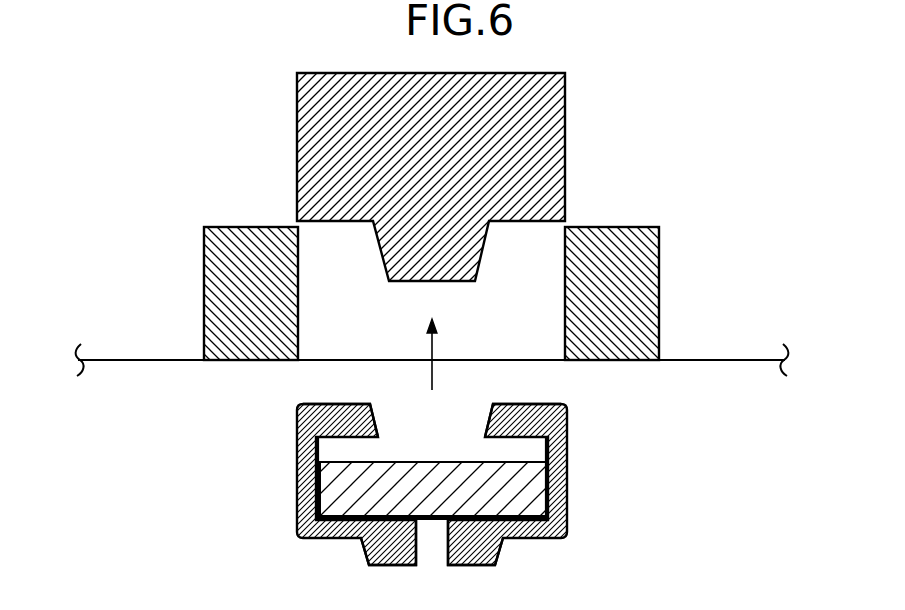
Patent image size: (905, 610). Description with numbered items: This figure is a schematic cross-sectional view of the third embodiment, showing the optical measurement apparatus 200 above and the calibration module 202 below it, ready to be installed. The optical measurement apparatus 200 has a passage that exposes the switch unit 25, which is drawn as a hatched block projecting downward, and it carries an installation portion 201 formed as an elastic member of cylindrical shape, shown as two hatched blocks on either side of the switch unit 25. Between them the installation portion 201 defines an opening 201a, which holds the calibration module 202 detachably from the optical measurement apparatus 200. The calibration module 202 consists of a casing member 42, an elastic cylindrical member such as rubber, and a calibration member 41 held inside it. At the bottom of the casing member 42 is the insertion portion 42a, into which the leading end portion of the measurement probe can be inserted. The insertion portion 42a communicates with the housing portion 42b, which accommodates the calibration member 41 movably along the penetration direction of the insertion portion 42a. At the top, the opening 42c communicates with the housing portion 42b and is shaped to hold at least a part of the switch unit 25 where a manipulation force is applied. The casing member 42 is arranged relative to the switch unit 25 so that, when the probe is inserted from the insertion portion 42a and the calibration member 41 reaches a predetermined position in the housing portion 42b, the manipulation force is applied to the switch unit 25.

The switch unit 25 is at (543, 133).
The calibration member 41 is at (538, 475).
The casing member 42 is at (560, 508).
The insertion portion 42a is at (447, 553).
The housing portion 42b is at (538, 443).
The opening 42c is at (489, 416).
The optical measurement apparatus 200 is at (760, 362).
The installation portion 201 is at (235, 362).
The opening 201a is at (330, 332).
The calibration module 202 is at (481, 494).